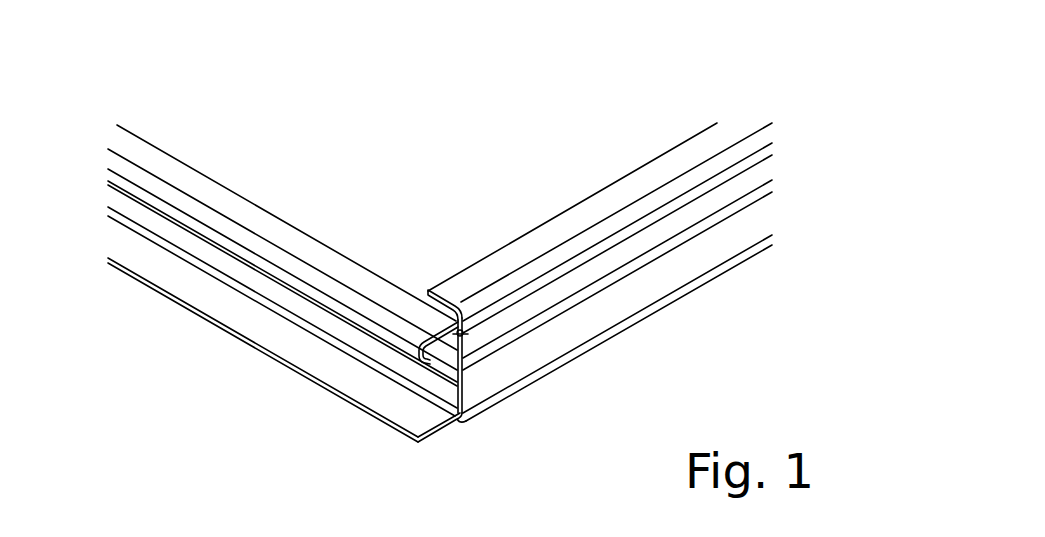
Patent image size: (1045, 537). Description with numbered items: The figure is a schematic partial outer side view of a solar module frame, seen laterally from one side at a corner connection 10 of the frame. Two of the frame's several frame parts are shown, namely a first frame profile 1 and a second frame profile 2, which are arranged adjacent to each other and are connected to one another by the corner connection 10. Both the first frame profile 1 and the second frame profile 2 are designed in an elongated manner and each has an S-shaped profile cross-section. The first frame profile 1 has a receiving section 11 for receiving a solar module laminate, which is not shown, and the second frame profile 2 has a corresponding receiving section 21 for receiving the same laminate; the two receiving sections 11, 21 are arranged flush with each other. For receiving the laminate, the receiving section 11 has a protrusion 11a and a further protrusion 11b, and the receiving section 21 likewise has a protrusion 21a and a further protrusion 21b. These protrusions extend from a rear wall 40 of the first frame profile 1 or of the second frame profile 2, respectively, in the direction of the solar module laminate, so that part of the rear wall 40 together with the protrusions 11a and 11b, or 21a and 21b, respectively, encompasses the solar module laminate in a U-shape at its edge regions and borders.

The first frame profile 1 is at (704, 130).
The second frame profile 2 is at (168, 151).
The corner connection 10 is at (433, 90).
The receiving section 11 is at (528, 298).
The protrusion 11a is at (427, 292).
The further protrusion 11b is at (462, 336).
The receiving section 21 is at (424, 331).
The protrusion 21a is at (307, 232).
The further protrusion 21b is at (428, 355).
The rear wall 40 is at (218, 235).